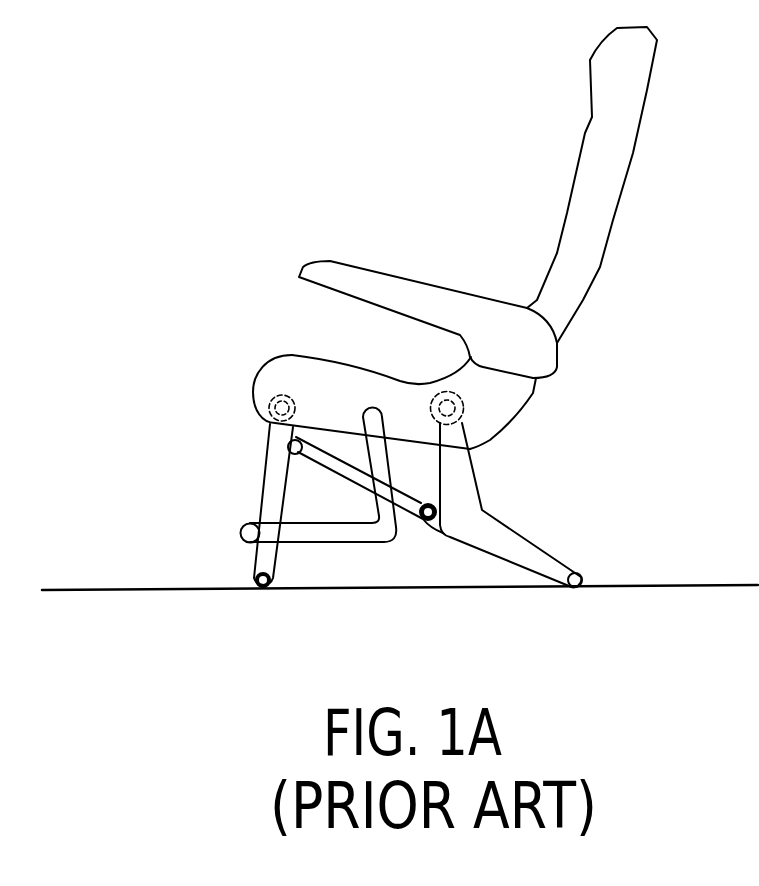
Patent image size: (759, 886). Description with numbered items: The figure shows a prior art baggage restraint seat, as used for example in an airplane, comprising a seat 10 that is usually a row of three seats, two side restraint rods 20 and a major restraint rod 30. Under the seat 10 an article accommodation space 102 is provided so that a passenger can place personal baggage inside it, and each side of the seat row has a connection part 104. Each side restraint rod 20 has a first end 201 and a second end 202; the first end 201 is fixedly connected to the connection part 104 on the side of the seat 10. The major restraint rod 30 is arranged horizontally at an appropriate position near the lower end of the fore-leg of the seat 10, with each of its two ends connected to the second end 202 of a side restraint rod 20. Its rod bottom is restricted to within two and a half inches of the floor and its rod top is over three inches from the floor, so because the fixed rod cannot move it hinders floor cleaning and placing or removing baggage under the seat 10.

The seat 10 is at (572, 293).
The article accommodation space 102 is at (335, 575).
The connection part 104 is at (370, 410).
The side restraint rod 20 is at (383, 530).
The first end 201 is at (375, 468).
The second end 202 is at (287, 528).
The major restraint rod 30 is at (242, 530).